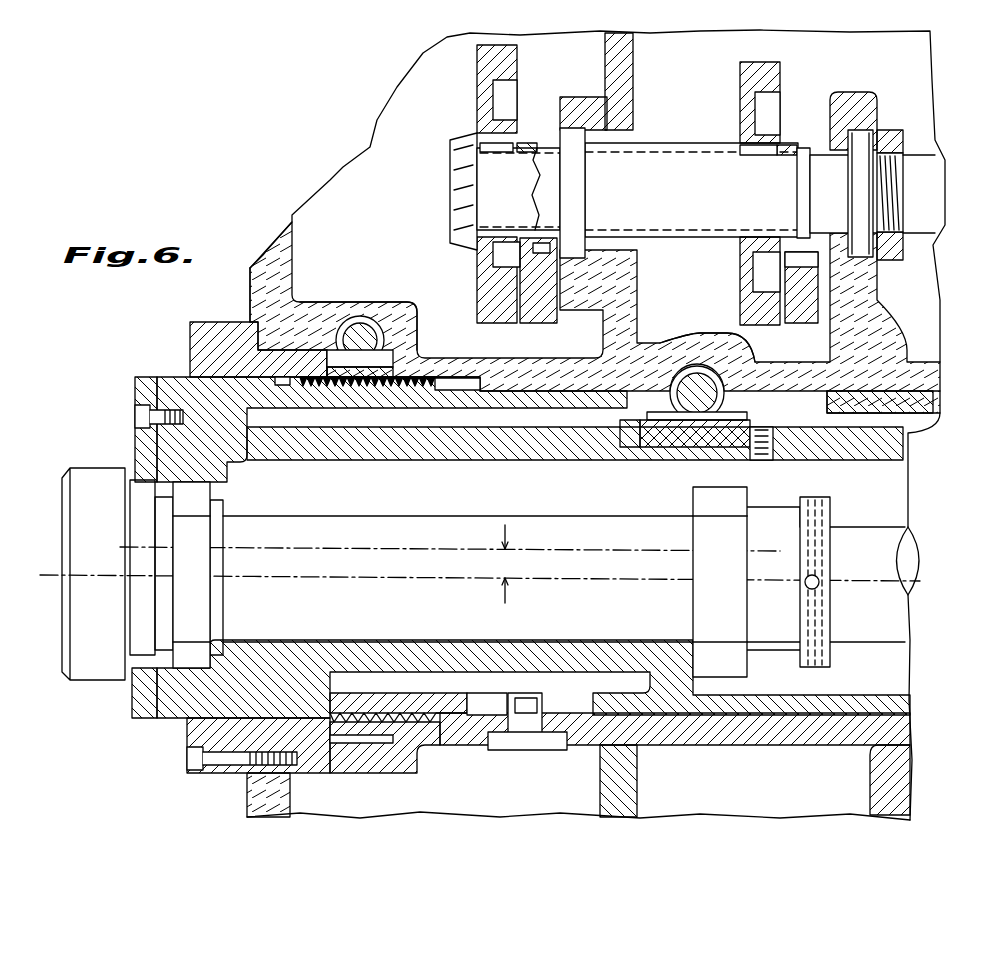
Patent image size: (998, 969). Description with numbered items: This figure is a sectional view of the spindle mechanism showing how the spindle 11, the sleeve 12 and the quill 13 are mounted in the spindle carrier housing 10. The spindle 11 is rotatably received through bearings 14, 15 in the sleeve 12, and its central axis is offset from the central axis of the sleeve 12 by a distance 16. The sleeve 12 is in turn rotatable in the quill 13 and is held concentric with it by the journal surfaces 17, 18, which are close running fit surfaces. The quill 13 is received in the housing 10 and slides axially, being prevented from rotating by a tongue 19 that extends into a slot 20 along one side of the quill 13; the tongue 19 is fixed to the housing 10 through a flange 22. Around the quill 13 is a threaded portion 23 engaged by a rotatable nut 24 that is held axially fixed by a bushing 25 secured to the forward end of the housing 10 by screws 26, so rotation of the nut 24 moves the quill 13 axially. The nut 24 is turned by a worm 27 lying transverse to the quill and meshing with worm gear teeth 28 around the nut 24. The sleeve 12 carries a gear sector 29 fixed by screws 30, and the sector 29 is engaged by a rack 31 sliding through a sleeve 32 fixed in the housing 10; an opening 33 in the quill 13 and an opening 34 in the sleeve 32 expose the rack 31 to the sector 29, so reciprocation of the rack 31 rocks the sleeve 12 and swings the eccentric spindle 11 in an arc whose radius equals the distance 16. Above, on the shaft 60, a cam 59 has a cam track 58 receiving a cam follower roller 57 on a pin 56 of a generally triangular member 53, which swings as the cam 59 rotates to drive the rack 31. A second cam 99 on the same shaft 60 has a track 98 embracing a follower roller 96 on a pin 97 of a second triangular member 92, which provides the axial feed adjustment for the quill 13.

The spindle carrier housing 10 is at (330, 180).
The spindle 11 is at (352, 516).
The sleeve 12 is at (495, 462).
The quill 13 is at (175, 375).
The bearing 14 is at (215, 500).
The bearing 15 is at (693, 503).
The distance 16 is at (480, 564).
The journal surface 17 is at (158, 705).
The journal surface 18 is at (710, 697).
The tongue 19 is at (530, 700).
The slot 20 is at (470, 705).
The flange 22 is at (515, 750).
The threaded portion 23 is at (465, 378).
The nut 24 is at (413, 340).
The bushing 25 is at (205, 320).
The screws 26 is at (187, 757).
The worm 27 is at (352, 322).
The worm gear teeth 28 is at (358, 745).
The gear sector 29 is at (680, 447).
The screws 30 is at (770, 455).
The rack 31 is at (735, 360).
The sleeve 32 is at (697, 368).
The opening 33 is at (823, 403).
The opening 34 is at (740, 415).
The triangular member 53 is at (800, 323).
The pin 56 is at (800, 252).
The cam follower roller 57 is at (763, 252).
The cam track 58 is at (755, 112).
The cam 59 is at (740, 95).
The shaft 60 is at (937, 165).
The triangular shaped member 92 is at (538, 323).
The follower roller 96 is at (500, 247).
The pin 97 is at (530, 243).
The track 98 is at (493, 120).
The cam 99 is at (477, 75).